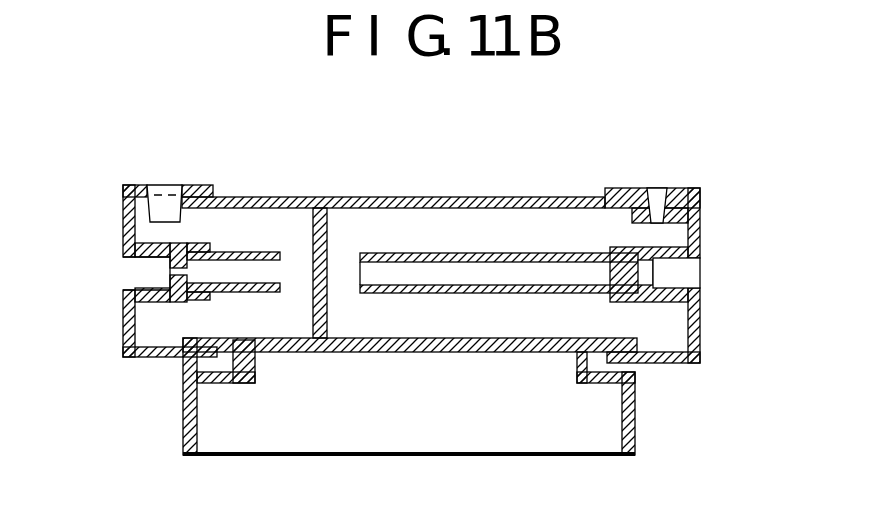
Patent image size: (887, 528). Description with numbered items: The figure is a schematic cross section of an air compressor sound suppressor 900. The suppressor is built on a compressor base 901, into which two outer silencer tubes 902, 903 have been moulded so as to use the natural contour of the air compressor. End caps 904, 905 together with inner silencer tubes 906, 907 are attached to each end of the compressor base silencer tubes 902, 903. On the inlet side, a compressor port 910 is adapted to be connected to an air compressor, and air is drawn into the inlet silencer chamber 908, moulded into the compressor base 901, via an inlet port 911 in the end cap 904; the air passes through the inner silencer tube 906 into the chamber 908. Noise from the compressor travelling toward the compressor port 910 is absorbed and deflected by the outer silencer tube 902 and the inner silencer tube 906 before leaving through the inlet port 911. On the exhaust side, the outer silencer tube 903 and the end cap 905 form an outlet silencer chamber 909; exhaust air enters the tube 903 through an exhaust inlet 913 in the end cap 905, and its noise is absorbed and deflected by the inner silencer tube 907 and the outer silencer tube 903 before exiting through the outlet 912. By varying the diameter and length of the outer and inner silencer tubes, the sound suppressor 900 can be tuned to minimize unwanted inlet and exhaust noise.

The air compressor sound suppressor 900 is at (408, 295).
The compressor base 901 is at (635, 440).
The outer silencer tube 902 is at (377, 197).
The outer silencer tube 903 is at (235, 197).
The end cap 904 is at (675, 363).
The end cap 905 is at (168, 357).
The inner silencer tube 906 is at (430, 253).
The inner silencer tube 907 is at (232, 295).
The inlet silencer chamber 908 is at (548, 330).
The outlet silencer chamber 909 is at (225, 325).
The compressor port 910 is at (660, 189).
The inlet port 911 is at (685, 272).
The outlet 912 is at (163, 186).
The exhaust inlet 913 is at (133, 272).